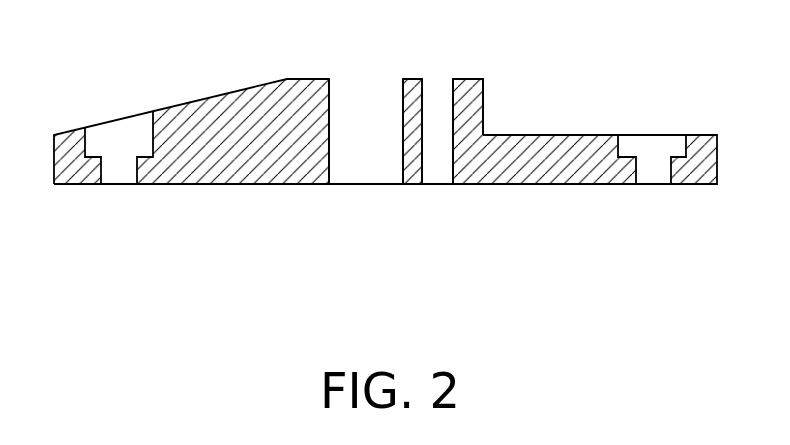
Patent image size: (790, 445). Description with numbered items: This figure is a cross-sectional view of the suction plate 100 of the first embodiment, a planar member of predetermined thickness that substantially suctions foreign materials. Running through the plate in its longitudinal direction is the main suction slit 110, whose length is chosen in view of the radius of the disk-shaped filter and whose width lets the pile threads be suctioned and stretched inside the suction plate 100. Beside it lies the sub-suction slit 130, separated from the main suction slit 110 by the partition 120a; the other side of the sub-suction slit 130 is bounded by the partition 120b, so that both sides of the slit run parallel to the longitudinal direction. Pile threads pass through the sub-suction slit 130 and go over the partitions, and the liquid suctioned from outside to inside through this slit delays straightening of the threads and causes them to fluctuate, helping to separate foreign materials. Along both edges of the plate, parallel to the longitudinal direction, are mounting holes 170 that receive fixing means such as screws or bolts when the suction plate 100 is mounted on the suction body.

The suction plate 100 is at (248, 177).
The main suction slit 110 is at (373, 112).
The partition 120a is at (413, 175).
The partition 120b is at (483, 92).
The sub-suction slit 130 is at (447, 96).
The mounting holes 170 is at (117, 138).